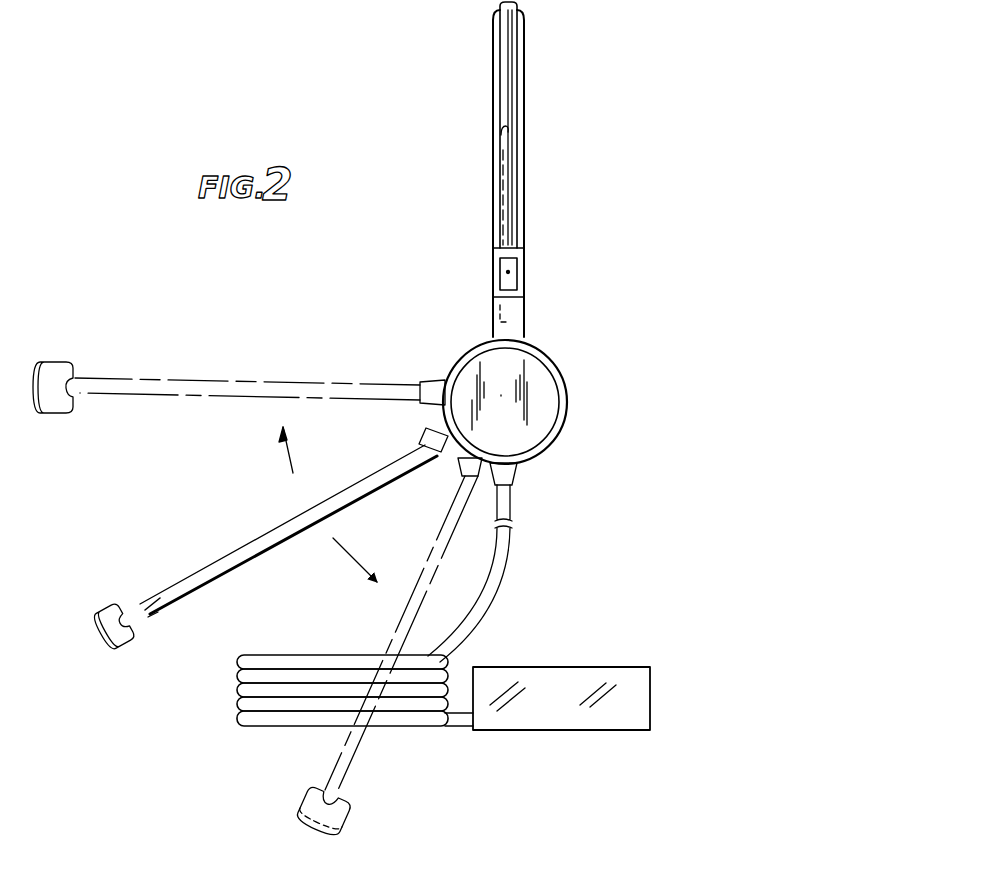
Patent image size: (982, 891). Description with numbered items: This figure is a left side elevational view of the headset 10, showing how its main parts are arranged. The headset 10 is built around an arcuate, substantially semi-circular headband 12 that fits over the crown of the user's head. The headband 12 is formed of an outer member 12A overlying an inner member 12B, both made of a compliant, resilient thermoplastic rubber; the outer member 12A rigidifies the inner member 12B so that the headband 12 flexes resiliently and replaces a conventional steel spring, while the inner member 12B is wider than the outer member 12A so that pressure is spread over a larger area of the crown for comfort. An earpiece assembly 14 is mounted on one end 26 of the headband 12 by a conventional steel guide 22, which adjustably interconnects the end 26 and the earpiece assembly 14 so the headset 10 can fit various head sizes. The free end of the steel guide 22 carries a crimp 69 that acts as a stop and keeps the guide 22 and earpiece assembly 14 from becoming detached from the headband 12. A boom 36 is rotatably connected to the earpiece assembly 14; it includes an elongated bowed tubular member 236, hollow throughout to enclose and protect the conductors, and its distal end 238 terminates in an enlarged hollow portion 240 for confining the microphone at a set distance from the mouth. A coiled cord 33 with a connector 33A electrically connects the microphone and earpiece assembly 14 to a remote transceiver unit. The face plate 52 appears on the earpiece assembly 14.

The headset 10 is at (303, 70).
The headband 12 is at (521, 14).
The outer member 12A is at (505, 62).
The inner member 12B is at (515, 103).
The crimp 69 is at (507, 135).
The steel guide 22 is at (508, 167).
The end of the headband 26 is at (527, 273).
The earpiece assembly 14 is at (569, 371).
The hub face plate 52 is at (554, 412).
The coiled cord 33 is at (513, 505).
The connector 33A is at (528, 734).
The boom 36 is at (170, 530).
The tubular member 236 is at (153, 600).
The distal end 238 is at (150, 618).
The enlarged hollow portion 240 is at (104, 640).